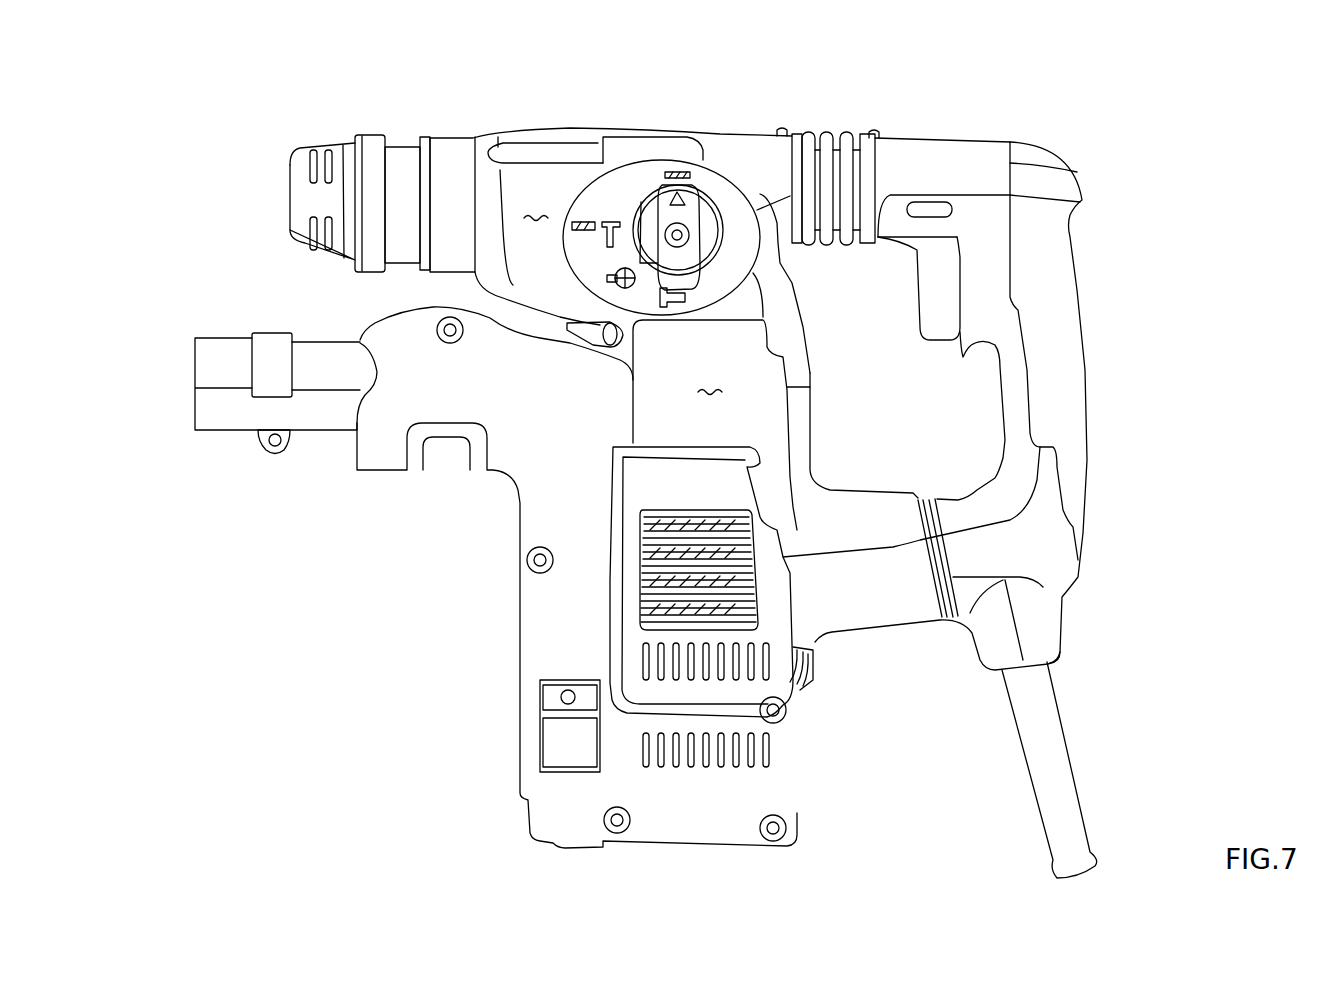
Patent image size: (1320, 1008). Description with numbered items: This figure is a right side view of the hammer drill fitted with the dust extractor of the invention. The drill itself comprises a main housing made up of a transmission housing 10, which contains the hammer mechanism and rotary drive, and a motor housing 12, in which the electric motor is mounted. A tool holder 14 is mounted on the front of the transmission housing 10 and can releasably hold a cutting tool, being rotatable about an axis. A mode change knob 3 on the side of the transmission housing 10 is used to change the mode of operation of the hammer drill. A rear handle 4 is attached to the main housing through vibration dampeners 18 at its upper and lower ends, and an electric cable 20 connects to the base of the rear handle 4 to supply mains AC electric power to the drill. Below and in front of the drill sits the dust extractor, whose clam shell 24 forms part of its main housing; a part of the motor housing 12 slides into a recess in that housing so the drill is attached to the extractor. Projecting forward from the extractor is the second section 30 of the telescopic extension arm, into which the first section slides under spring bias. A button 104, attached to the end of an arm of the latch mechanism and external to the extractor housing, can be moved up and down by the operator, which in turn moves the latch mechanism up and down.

The mode change knob 3 is at (670, 217).
The rear handle 4 is at (990, 323).
The transmission housing 10 is at (720, 250).
The motor housing 12 is at (715, 475).
The tool holder 14 is at (307, 147).
The vibration dampeners 18 is at (807, 132).
The electric cable 20 is at (1045, 738).
The clam shell 24 is at (548, 604).
The second section of telescopic arm 30 is at (223, 357).
The button 104 is at (563, 734).